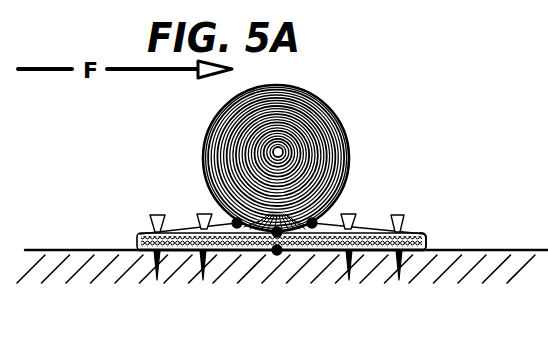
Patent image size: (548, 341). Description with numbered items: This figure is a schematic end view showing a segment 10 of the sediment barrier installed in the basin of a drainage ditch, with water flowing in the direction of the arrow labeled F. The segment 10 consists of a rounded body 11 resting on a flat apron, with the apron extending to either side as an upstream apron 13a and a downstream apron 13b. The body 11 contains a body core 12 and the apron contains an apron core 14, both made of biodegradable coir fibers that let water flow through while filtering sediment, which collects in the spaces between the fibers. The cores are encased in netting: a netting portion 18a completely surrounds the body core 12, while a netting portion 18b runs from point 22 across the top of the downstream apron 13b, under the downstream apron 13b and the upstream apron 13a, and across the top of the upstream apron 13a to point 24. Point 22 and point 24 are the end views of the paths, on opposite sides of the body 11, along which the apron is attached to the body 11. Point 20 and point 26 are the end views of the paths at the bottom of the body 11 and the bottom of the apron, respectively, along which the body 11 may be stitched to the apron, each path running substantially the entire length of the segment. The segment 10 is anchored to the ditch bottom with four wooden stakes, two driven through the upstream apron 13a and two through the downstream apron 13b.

The segment 10 is at (311, 132).
The body 11 is at (311, 146).
The body core 12 is at (324, 150).
The upstream apron 13a is at (181, 220).
The downstream apron 13b is at (417, 212).
The apron core 14 is at (137, 242).
The netting portion 18a is at (219, 110).
The netting portion 18b is at (424, 232).
The point 20 is at (280, 236).
The point 22 is at (318, 220).
The point 24 is at (234, 221).
The point 26 is at (276, 254).